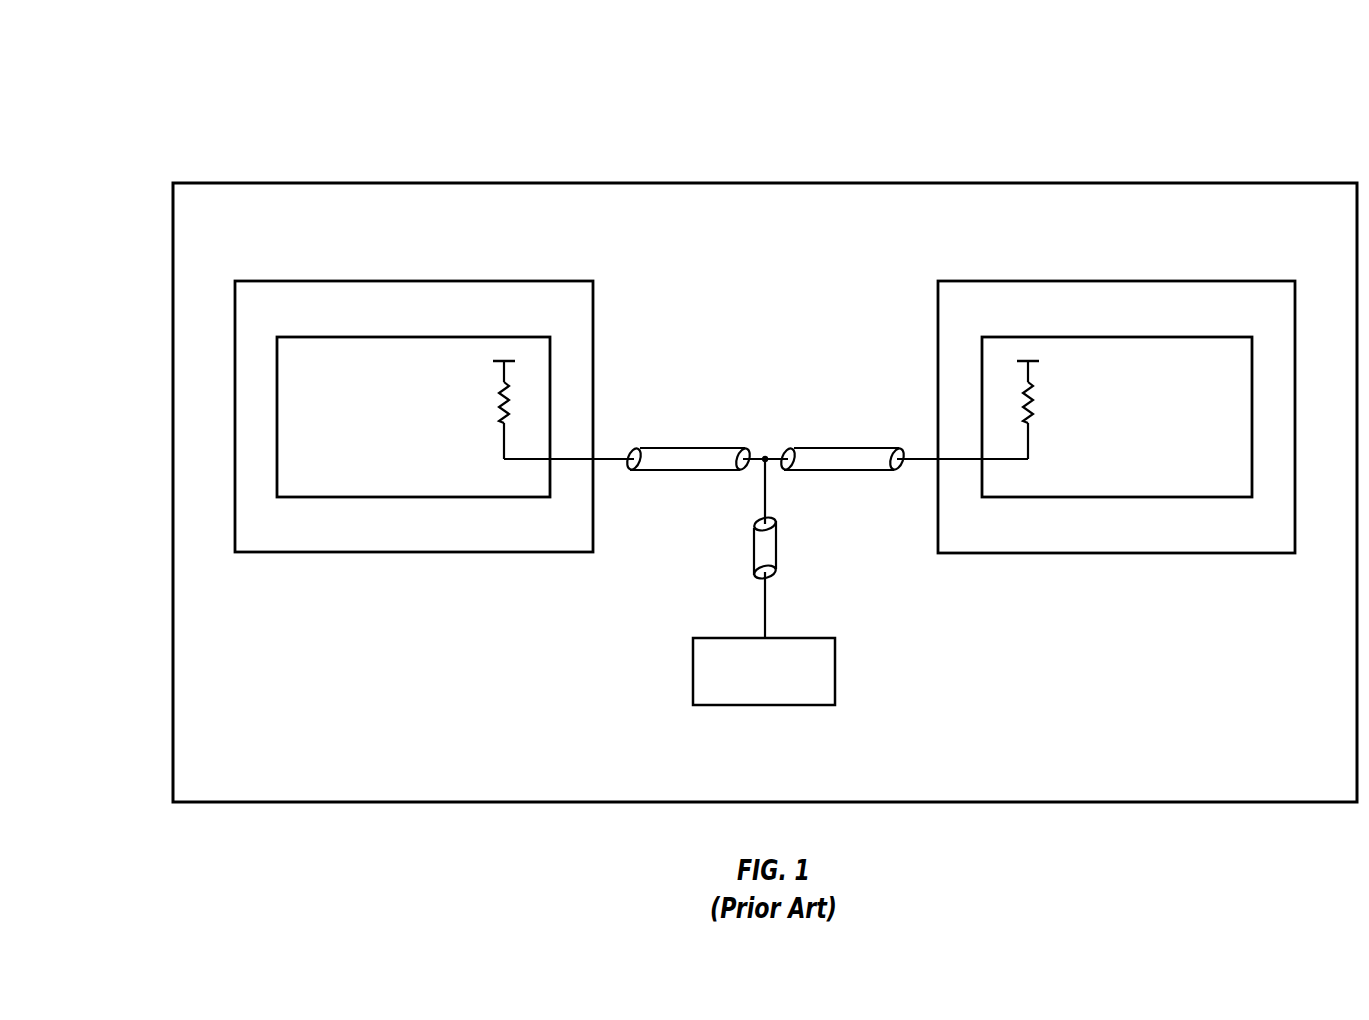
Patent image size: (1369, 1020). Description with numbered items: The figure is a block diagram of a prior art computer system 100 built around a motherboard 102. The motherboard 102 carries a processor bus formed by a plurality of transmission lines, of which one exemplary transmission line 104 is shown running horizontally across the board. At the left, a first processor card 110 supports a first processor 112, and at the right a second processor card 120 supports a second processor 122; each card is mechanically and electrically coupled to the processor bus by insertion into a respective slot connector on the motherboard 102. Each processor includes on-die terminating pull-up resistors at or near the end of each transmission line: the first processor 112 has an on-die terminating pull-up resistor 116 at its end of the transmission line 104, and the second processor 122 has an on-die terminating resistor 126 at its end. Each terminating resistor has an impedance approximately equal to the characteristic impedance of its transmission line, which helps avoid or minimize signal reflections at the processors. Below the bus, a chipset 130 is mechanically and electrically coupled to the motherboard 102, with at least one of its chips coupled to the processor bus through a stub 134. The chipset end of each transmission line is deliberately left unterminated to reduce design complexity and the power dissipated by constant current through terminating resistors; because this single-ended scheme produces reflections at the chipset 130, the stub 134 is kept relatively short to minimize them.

The computer system 100 is at (312, 92).
The motherboard 102 is at (765, 467).
The transmission line 104 is at (766, 427).
The first processor card 110 is at (414, 392).
The first processor 112 is at (413, 392).
The on-die terminating pull-up resistor 116 is at (467, 422).
The second processor card 120 is at (1116, 393).
The second processor 122 is at (1117, 392).
The on-die terminating resistor 126 is at (1067, 399).
The chipset 130 is at (802, 648).
The stub 134 is at (802, 548).